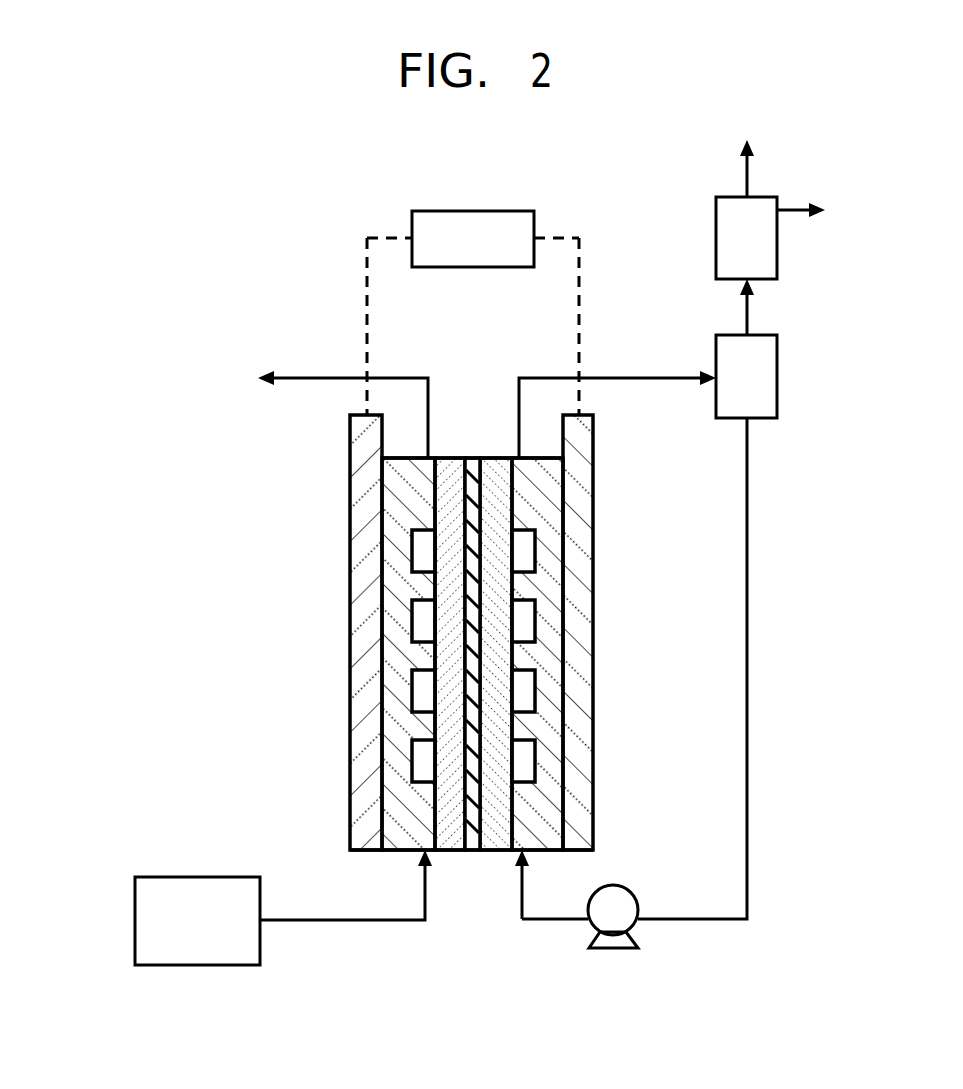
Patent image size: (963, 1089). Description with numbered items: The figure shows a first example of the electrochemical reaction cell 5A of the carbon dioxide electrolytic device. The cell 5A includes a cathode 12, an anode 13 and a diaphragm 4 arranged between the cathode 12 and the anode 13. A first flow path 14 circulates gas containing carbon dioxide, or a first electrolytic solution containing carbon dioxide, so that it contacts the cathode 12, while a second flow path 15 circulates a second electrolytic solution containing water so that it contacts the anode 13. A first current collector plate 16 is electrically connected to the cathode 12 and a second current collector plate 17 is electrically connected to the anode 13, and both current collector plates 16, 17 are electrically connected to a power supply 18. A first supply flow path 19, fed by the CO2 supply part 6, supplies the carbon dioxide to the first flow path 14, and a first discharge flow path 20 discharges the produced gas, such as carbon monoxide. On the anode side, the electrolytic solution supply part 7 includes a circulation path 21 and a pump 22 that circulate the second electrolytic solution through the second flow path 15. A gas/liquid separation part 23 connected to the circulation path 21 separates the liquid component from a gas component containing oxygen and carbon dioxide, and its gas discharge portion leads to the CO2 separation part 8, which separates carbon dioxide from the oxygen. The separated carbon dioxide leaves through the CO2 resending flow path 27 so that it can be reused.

The diaphragm 4 is at (472, 488).
The electrochemical reaction cell 5A is at (475, 866).
The CO2 supply part 6 is at (172, 877).
The electrolytic solution supply part 7 is at (785, 587).
The CO2 separation part 8 is at (716, 240).
The cathode 12 is at (448, 583).
The anode 13 is at (498, 583).
The first flow path 14 is at (425, 682).
The second flow path 15 is at (525, 682).
The first current collector plate 16 is at (368, 780).
The second current collector plate 17 is at (582, 778).
The power supply 18 is at (445, 211).
The first supply flow path 19 is at (313, 922).
The first discharge flow path 20 is at (310, 372).
The circulation path 21 is at (748, 783).
The pump 22 is at (613, 950).
The gas/liquid separation part 23 is at (777, 376).
The CO2 resending flow path 27 is at (745, 168).